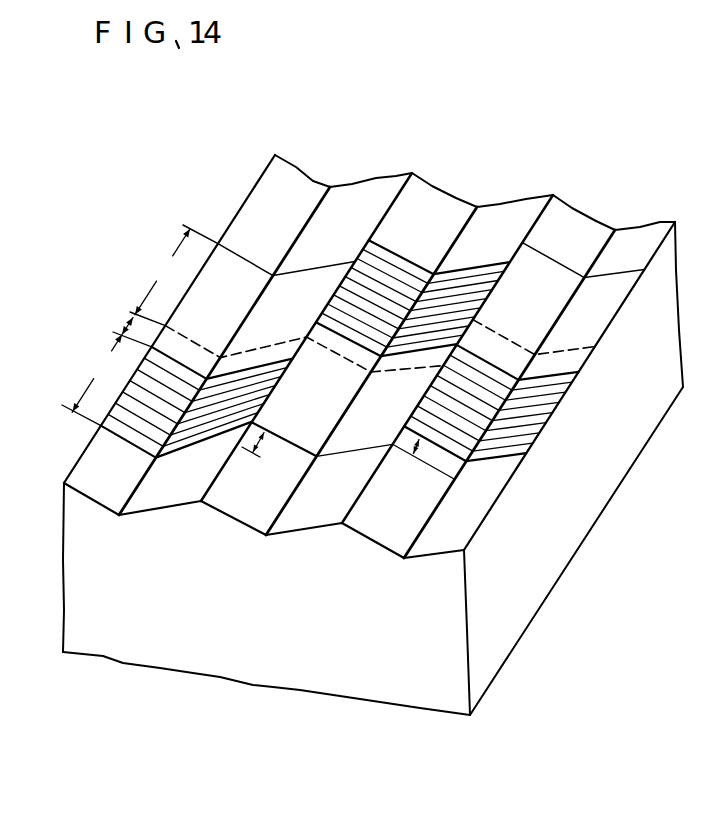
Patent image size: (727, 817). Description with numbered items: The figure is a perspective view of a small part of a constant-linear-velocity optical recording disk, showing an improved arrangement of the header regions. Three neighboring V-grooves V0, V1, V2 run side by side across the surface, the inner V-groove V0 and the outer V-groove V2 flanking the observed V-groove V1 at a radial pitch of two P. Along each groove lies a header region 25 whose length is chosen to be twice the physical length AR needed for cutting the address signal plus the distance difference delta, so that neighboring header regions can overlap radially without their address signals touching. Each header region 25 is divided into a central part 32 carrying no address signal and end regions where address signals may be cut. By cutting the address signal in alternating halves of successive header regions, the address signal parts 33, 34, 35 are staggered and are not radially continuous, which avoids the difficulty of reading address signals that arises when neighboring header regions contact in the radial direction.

The header region 25 is at (239, 339).
The central part 32 is at (594, 343).
The address signal part 33 is at (124, 426).
The address signal part 34 is at (401, 266).
The address signal part 35 is at (513, 436).
The V-groove V0 is at (221, 371).
The V-groove V1 is at (361, 392).
The V-groove V2 is at (502, 410).